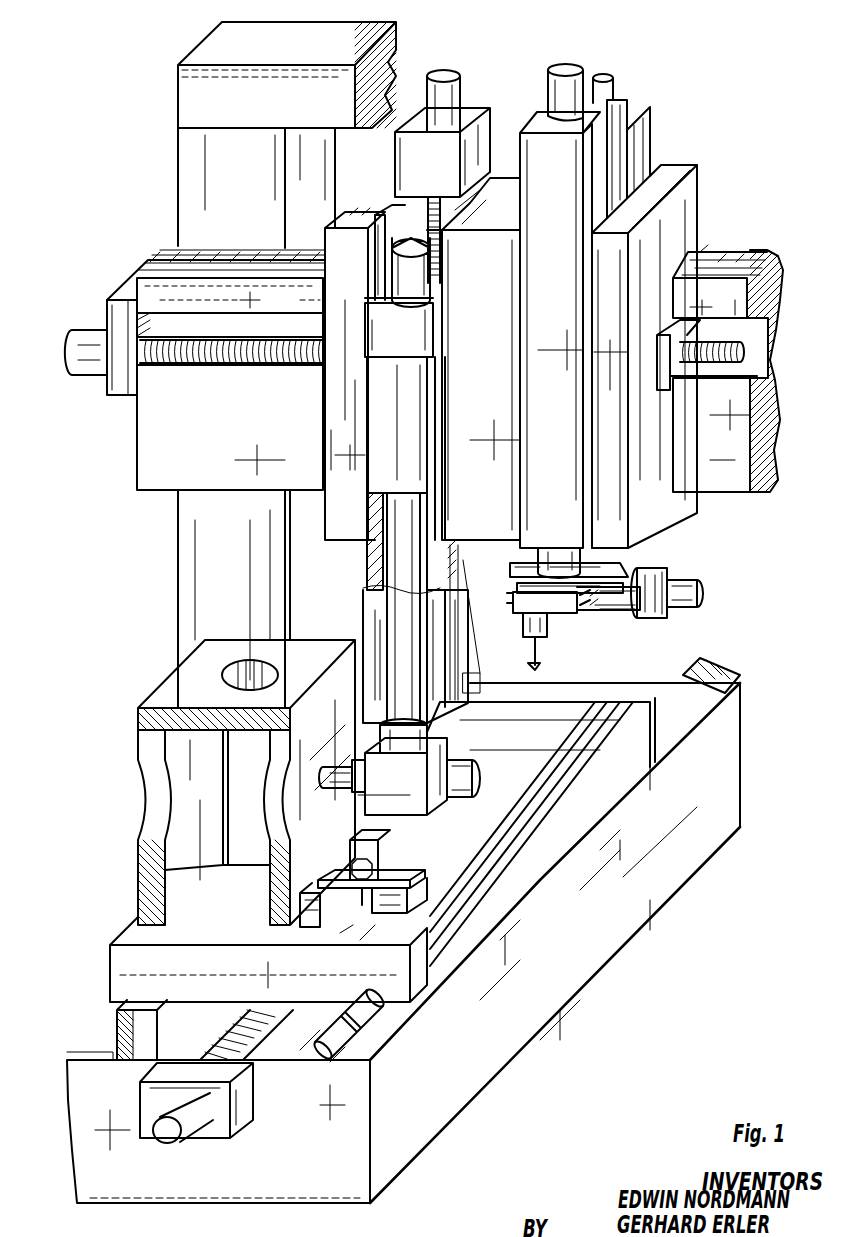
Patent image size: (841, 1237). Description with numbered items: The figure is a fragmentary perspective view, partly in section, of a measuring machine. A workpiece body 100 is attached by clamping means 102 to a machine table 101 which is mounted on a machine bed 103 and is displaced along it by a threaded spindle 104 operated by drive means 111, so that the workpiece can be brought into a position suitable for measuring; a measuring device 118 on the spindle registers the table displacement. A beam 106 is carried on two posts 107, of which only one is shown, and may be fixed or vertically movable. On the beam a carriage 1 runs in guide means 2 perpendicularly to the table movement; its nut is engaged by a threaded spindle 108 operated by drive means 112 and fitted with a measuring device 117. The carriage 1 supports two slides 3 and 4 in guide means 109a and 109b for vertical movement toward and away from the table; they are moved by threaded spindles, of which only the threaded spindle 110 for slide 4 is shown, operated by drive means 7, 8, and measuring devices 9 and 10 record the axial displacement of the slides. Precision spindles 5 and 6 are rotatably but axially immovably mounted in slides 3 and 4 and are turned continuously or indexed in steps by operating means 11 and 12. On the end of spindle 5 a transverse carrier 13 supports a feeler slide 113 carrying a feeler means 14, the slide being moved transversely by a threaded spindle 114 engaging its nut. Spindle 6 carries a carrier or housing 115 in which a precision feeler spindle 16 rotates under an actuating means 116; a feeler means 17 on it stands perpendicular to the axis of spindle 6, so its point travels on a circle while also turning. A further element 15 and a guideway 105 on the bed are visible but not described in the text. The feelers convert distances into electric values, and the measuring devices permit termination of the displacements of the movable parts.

The carriage 1 is at (672, 213).
The guide means 2 is at (700, 280).
The slide 3 is at (533, 220).
The slide 4 is at (373, 613).
The precision spindle 5 is at (567, 563).
The precision spindle 6 is at (398, 530).
The drive means 7 is at (634, 130).
The drive means 8 is at (427, 150).
The measuring device 9 is at (593, 90).
The measuring device 10 is at (442, 95).
The operating means 11 is at (555, 155).
The operating means 12 is at (385, 320).
The transverse carrier 13 is at (673, 567).
The feeler means 14 is at (535, 657).
The handle 15 is at (700, 585).
The precision feeler spindle 16 is at (358, 795).
The feeler means 17 is at (347, 773).
The workpiece body 100 is at (202, 690).
The machine table 101 is at (155, 970).
The clamping means 102 is at (427, 887).
The machine bed 103 is at (427, 1083).
The threaded spindle 104 is at (275, 1038).
The guideway 105 is at (130, 1025).
The beam 106 is at (168, 292).
The post 107 is at (242, 155).
The threaded spindle 108 is at (202, 363).
The guide means 109a is at (617, 122).
The guide means 109b is at (448, 610).
The threaded spindle 110 is at (423, 200).
The drive means 111 is at (217, 1097).
The drive means 112 is at (100, 343).
The feeler slide 113 is at (555, 605).
The threaded spindle 114 is at (615, 616).
The carrier or housing 115 is at (410, 790).
The actuating means 116 is at (455, 778).
The measuring device 117 is at (127, 388).
The measuring device 118 is at (253, 1117).